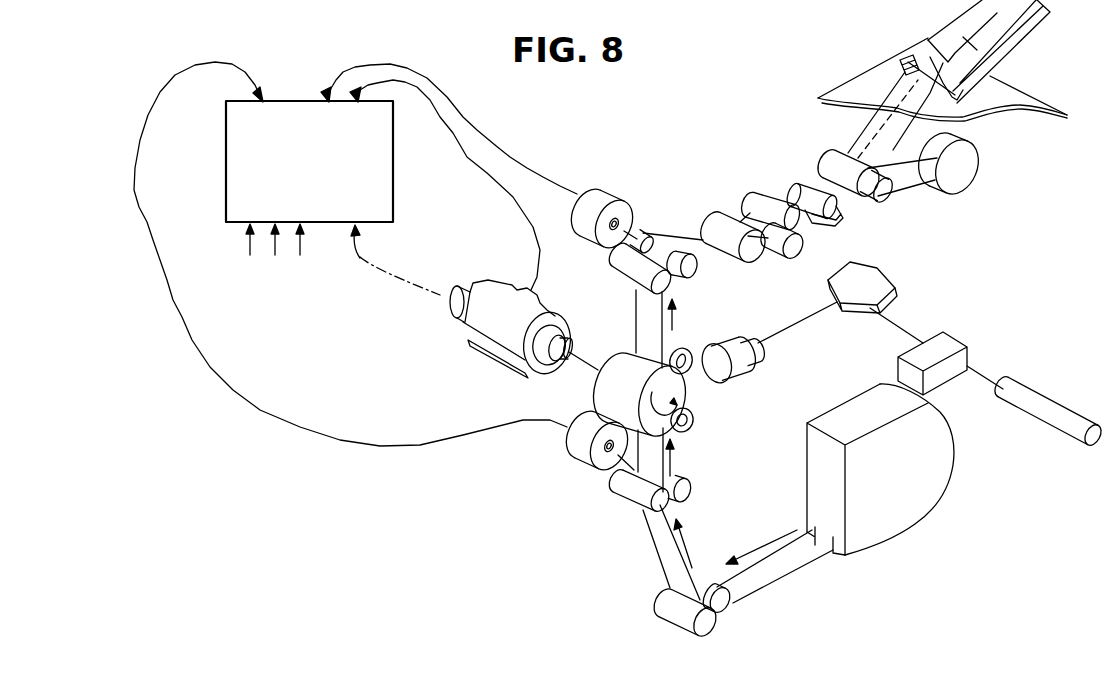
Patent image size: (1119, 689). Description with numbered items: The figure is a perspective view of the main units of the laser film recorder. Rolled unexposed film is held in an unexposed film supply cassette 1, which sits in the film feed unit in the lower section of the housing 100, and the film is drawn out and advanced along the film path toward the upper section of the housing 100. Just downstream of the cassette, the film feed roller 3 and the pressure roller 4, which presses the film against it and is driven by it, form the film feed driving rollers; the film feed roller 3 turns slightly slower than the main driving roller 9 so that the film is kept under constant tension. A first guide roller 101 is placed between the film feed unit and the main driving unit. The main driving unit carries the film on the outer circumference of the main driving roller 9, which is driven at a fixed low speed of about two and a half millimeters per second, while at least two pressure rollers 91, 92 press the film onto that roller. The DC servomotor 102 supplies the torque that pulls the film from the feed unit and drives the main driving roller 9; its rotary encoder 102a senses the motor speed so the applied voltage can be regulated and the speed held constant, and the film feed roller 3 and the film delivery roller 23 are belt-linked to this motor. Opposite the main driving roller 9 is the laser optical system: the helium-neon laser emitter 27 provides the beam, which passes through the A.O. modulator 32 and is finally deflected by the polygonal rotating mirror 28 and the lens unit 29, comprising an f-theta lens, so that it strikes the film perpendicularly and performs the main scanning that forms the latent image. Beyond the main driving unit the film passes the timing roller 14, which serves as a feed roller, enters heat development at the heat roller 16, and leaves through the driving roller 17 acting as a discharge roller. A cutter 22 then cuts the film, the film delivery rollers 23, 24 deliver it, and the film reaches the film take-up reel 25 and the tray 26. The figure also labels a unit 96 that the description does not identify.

The unexposed film supply cassette 1 is at (913, 532).
The film feed roller 3 is at (736, 606).
The pressure roller 4 is at (685, 617).
The main driving roller 9 is at (620, 362).
The timing roller 14 is at (684, 277).
The heat roller 16 is at (722, 208).
The driving roller 17 is at (800, 258).
The cutter 22 is at (850, 226).
The film delivery roller 23 is at (886, 197).
The film delivery roller 24 is at (833, 171).
The film take-up reel 25 is at (963, 178).
The tray 26 is at (1035, 30).
The helium-neon laser emitter 27 is at (1060, 405).
The polygonal rotating mirror 28 is at (880, 277).
The lens unit 29 is at (742, 368).
The A.O. modulator 32 is at (958, 342).
The pressure roller 91 is at (692, 432).
The pressure roller 92 is at (675, 349).
The controller 96 is at (303, 110).
The housing 100 is at (882, 79).
The first guide roller 101 is at (686, 501).
The DC servomotor 102 is at (498, 332).
The rotary encoder 102a is at (462, 300).